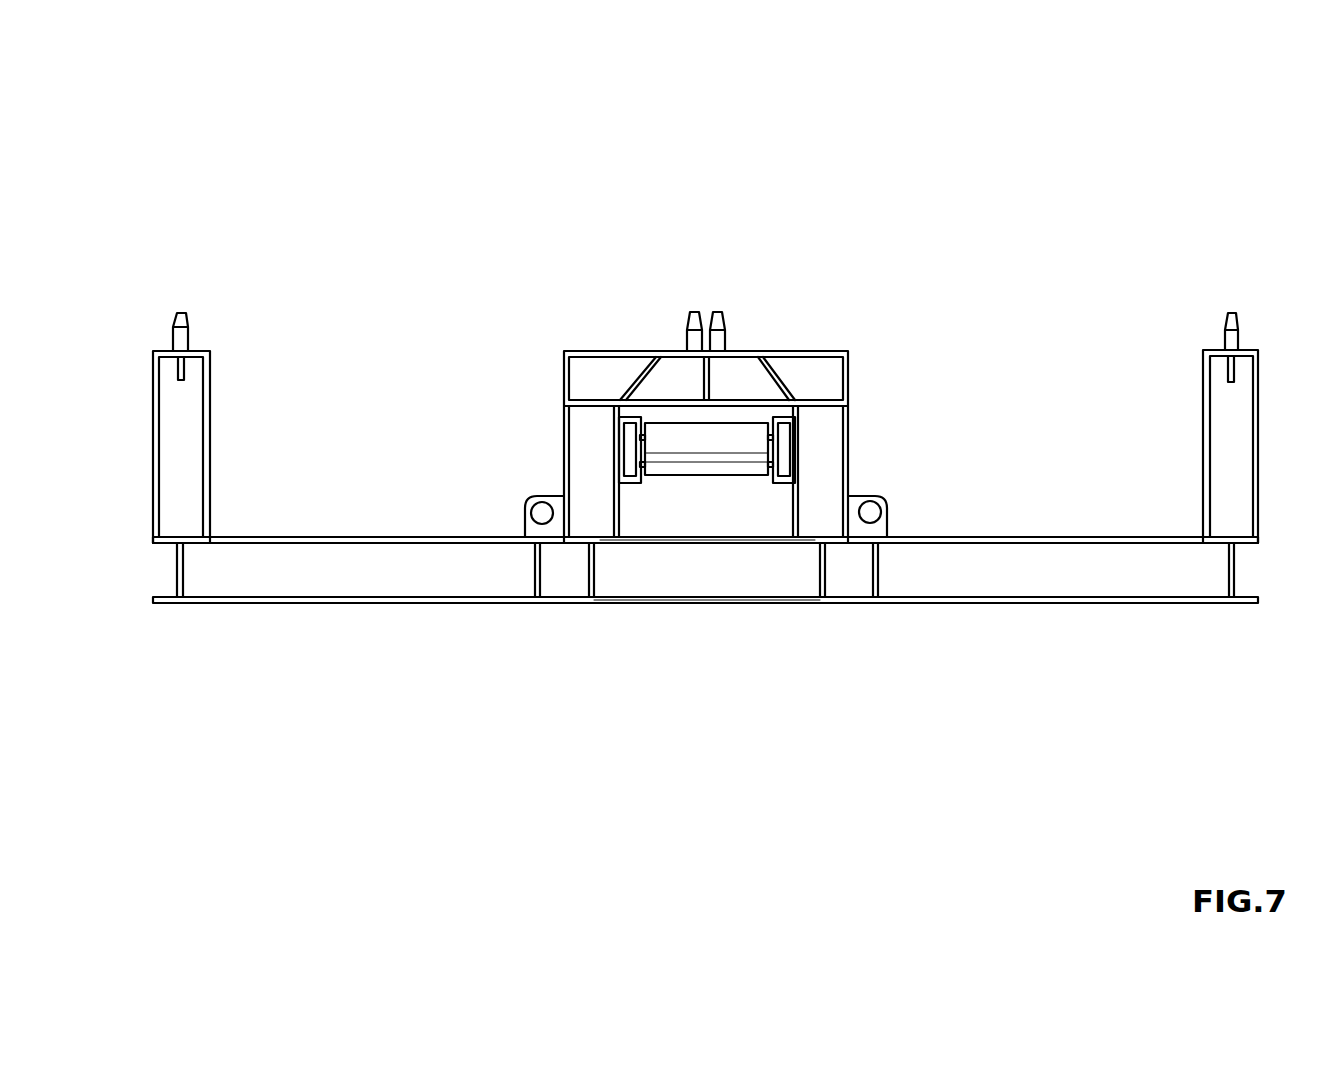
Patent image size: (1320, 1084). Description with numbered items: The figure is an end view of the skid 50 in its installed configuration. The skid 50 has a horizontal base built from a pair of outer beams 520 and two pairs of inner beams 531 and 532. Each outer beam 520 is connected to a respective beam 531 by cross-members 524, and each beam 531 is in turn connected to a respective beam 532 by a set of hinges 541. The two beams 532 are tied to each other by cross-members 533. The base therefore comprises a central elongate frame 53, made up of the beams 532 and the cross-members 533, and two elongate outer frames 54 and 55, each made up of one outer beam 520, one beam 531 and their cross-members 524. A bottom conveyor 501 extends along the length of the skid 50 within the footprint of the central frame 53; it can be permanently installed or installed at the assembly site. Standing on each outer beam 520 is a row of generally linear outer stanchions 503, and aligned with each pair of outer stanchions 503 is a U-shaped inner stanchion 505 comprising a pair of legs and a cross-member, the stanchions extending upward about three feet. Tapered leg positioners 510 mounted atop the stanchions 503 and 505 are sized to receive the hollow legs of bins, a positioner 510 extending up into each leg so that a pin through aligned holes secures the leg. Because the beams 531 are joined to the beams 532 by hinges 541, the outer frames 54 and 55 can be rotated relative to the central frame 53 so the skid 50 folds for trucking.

The skid 50 is at (1142, 160).
The tapered leg positioner 510 is at (185, 312).
The outer stanchion 503 is at (210, 457).
The bottom conveyor 501 is at (677, 447).
The U-shaped inner stanchion 505 is at (848, 448).
The hinge 541 is at (542, 508).
The outer beam 520 is at (192, 603).
The cross-member 524 is at (450, 603).
The inner beam 531 is at (550, 603).
The inner beam 532 is at (828, 603).
The cross-member 533 is at (724, 603).
The outer frame 55 is at (568, 747).
The central elongate frame 53 is at (848, 747).
The outer frame 54 is at (1260, 747).